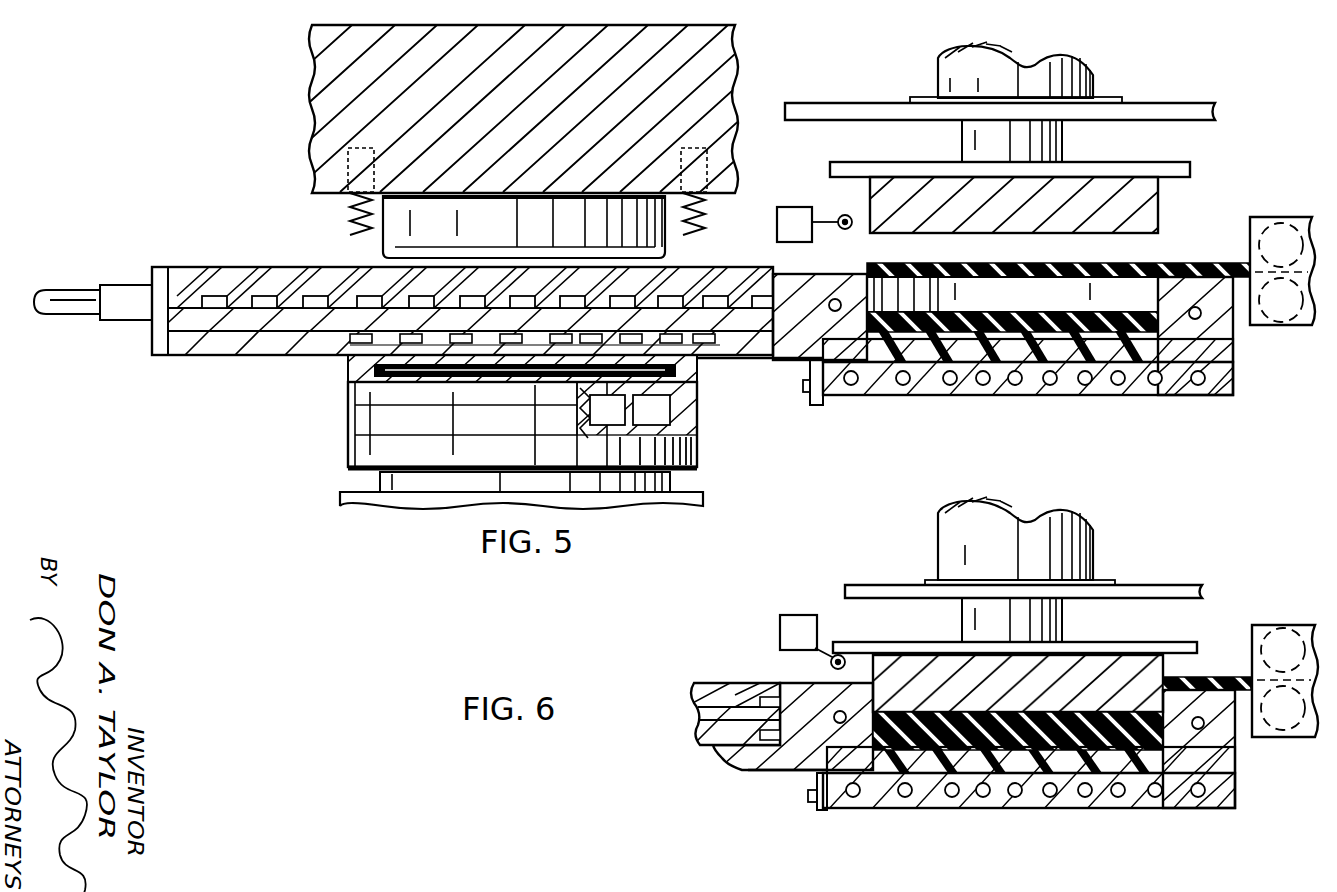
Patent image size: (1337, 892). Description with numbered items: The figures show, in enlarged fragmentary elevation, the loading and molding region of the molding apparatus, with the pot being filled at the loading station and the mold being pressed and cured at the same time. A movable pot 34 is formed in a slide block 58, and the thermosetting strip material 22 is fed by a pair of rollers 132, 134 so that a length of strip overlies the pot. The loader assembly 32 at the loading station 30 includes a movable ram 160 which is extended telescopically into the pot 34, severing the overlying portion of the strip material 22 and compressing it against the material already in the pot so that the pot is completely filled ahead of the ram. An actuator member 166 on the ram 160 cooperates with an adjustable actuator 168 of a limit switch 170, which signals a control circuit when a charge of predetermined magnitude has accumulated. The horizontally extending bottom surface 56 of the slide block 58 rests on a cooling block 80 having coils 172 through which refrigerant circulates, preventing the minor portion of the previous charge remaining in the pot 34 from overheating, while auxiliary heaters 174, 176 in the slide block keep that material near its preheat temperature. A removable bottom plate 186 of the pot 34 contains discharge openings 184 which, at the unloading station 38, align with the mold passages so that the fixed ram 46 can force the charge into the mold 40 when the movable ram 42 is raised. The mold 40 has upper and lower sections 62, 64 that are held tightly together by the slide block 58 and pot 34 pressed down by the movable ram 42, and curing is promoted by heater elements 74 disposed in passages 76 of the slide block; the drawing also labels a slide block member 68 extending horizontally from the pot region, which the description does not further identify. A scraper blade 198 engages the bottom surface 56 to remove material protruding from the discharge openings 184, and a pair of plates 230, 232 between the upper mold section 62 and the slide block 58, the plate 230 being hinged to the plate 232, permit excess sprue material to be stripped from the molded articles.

In FIG. 5, the thermosetting strip material 22 is at (1244, 266).
In FIG. 6, the thermosetting strip material 22 is at (1210, 675).
In FIG. 5, the loading station 30 is at (921, 66).
In FIG. 6, the loading station 30 is at (915, 540).
In FIG. 5, the loader assembly 32 is at (1105, 90).
In FIG. 6, the loader assembly 32 is at (1103, 568).
In FIG. 5, the movable pot 34 is at (1150, 350).
In FIG. 6, the movable pot 34 is at (1150, 765).
In FIG. 5, the unloading station 38 is at (267, 184).
In FIG. 5, the mold 40 is at (344, 434).
In FIG. 5, the movable ram 42 is at (382, 482).
In FIG. 5, the fixed ram 46 is at (433, 220).
In FIG. 5, the bottom surface 56 is at (800, 400).
In FIG. 6, the bottom surface 56 is at (750, 772).
In FIG. 5, the slide block 58 is at (793, 264).
In FIG. 6, the slide block 58 is at (702, 672).
In FIG. 5, the upper mold section 62 is at (697, 405).
In FIG. 5, the lower mold section 64 is at (697, 432).
In FIG. 5, the rack bar 68 is at (244, 256).
In FIG. 6, the rack bar 68 is at (686, 708).
In FIG. 5, the heater elements 74 is at (662, 336).
In FIG. 5, the passages 76 is at (741, 332).
In FIG. 5, the cooling block 80 is at (1030, 396).
In FIG. 6, the cooling block 80 is at (1108, 806).
In FIG. 5, the feed roller 132 is at (1281, 226).
In FIG. 6, the feed roller 132 is at (1290, 632).
In FIG. 5, the feed roller 134 is at (1281, 324).
In FIG. 6, the feed roller 134 is at (1272, 734).
In FIG. 5, the movable ram 160 is at (1158, 212).
In FIG. 6, the movable ram 160 is at (1032, 694).
In FIG. 5, the actuator member 166 is at (833, 164).
In FIG. 6, the actuator member 166 is at (880, 645).
In FIG. 5, the actuator 168 is at (855, 224).
In FIG. 6, the actuator 168 is at (832, 664).
In FIG. 5, the limit switch 170 is at (777, 225).
In FIG. 6, the limit switch 170 is at (780, 633).
In FIG. 5, the coils 172 is at (1203, 410).
In FIG. 6, the coils 172 is at (1206, 822).
In FIG. 5, the auxiliary heater 174 is at (1200, 298).
In FIG. 6, the auxiliary heater 174 is at (1205, 708).
In FIG. 5, the auxiliary heater 176 is at (837, 299).
In FIG. 6, the auxiliary heater 176 is at (836, 715).
In FIG. 5, the discharge openings 184 is at (933, 350).
In FIG. 6, the discharge openings 184 is at (904, 777).
In FIG. 5, the bottom plate 186 is at (950, 332).
In FIG. 6, the bottom plate 186 is at (1072, 752).
In FIG. 5, the scraper blade 198 is at (818, 400).
In FIG. 6, the scraper blade 198 is at (816, 811).
In FIG. 5, the plate 230 is at (697, 366).
In FIG. 5, the plate 232 is at (697, 385).